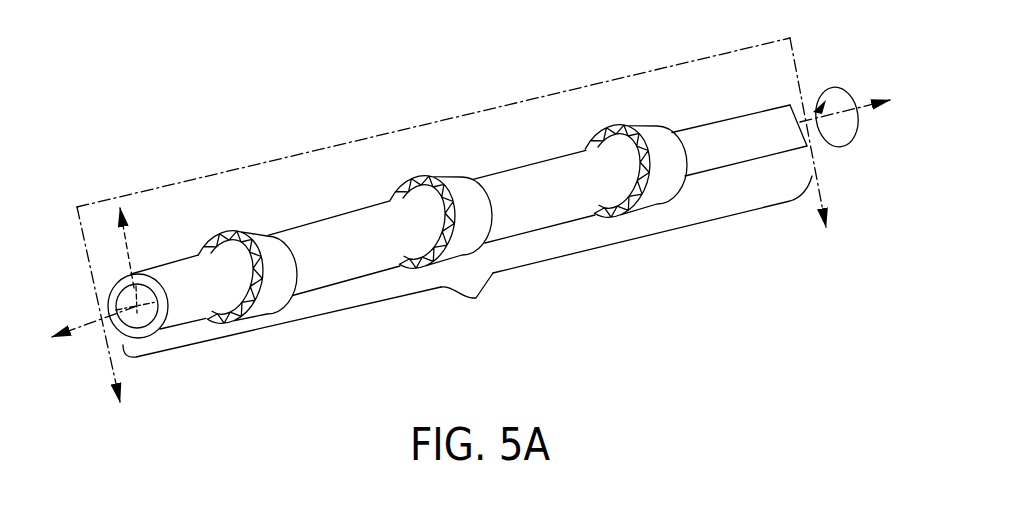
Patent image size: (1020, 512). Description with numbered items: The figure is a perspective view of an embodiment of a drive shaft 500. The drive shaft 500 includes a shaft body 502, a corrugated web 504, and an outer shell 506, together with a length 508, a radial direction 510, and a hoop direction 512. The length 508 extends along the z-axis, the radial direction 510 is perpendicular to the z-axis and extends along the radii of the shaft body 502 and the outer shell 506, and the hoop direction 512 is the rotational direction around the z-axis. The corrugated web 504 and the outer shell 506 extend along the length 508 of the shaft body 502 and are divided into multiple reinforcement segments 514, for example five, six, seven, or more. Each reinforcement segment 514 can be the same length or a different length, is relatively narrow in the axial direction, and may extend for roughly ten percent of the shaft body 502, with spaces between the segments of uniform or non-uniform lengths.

The drive shaft 500 is at (188, 92).
The shaft body 502 is at (195, 312).
The corrugated web 504 is at (247, 310).
The outer shell 506 is at (253, 233).
The length 508 is at (476, 300).
The radial direction 510 is at (128, 256).
The hoop direction 512 is at (851, 84).
The reinforcement segments 514 is at (342, 272).